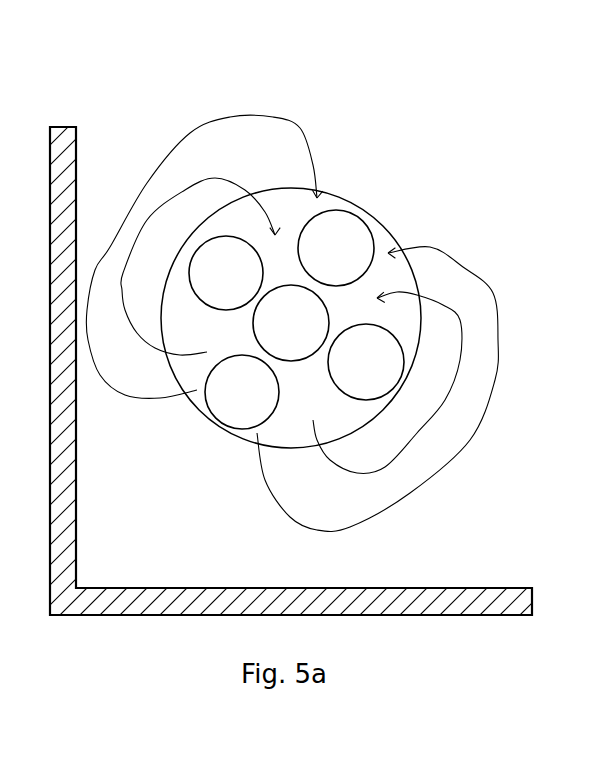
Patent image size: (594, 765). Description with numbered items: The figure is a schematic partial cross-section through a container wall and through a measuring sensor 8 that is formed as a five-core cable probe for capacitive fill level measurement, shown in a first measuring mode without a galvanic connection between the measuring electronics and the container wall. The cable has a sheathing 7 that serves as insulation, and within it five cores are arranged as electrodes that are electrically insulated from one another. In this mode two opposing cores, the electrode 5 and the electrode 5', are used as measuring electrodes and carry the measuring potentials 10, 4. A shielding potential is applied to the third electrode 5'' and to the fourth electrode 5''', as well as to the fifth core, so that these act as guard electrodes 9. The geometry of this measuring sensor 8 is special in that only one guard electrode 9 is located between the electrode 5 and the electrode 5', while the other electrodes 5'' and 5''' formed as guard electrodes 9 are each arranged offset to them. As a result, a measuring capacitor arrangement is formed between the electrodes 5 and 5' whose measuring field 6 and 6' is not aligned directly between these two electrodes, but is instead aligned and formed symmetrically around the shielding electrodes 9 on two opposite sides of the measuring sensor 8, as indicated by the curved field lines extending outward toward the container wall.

The potential 4 is at (337, 208).
The electrode 5 is at (336, 248).
The electrode 5' is at (234, 332).
The third electrode 5'' is at (291, 323).
The fourth electrode 5''' is at (366, 362).
The measuring field 6 is at (204, 256).
The measuring field 6' is at (396, 389).
The sheathing 7 is at (366, 189).
The measuring sensor 8 is at (428, 204).
The guard electrode 9 is at (274, 290).
The potential 10 is at (231, 426).